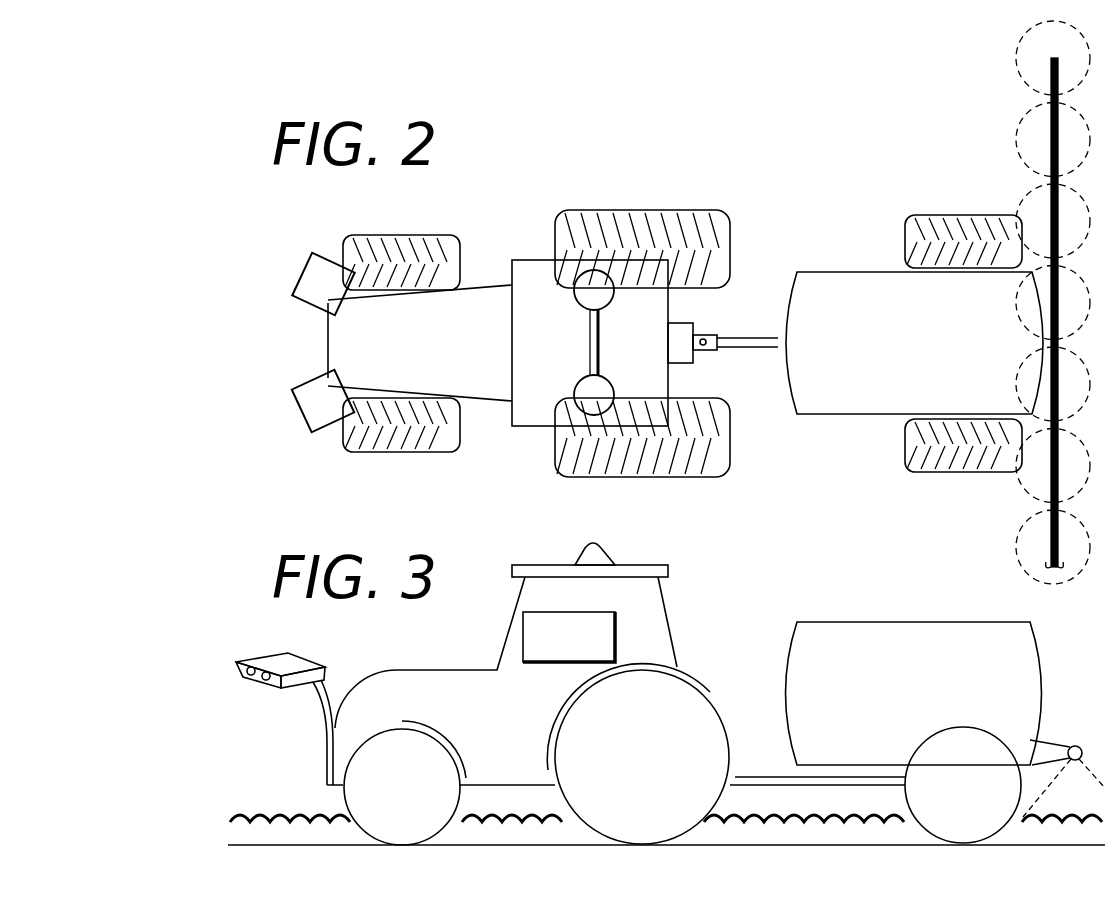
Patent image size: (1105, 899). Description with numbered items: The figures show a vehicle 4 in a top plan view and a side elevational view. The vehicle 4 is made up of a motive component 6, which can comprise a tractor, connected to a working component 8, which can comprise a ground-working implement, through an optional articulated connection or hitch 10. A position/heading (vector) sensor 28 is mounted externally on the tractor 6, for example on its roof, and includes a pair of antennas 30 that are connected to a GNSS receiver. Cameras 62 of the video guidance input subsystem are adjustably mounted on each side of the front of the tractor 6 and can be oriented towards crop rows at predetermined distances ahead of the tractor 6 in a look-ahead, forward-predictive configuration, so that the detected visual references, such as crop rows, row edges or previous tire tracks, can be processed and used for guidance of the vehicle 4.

In FIG. 2, the vehicle 4 is at (572, 130).
In FIG. 3, the vehicle 4 is at (812, 538).
In FIG. 2, the motive component 6 is at (446, 346).
In FIG. 3, the motive component 6 is at (446, 708).
In FIG. 2, the working component 8 is at (915, 354).
In FIG. 3, the working component 8 is at (915, 708).
In FIG. 2, the hitch 10 is at (705, 333).
In FIG. 2, the position/heading sensor 28 is at (603, 342).
In FIG. 2, the antennas 30 is at (575, 390).
In FIG. 2, the cameras 62 is at (313, 303).
In FIG. 3, the cameras 62 is at (284, 719).